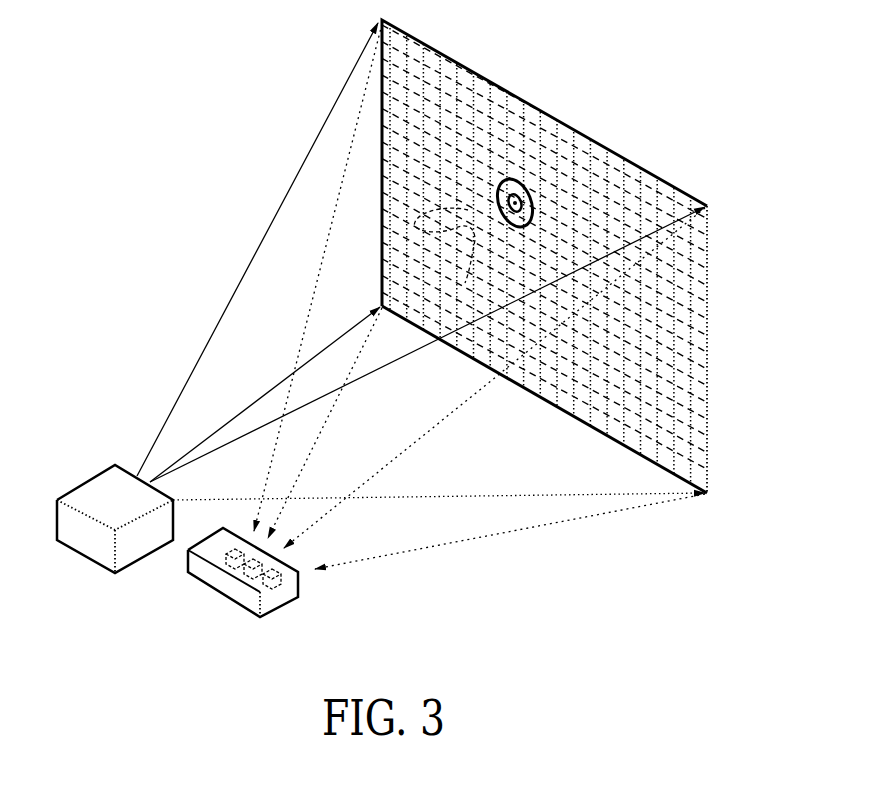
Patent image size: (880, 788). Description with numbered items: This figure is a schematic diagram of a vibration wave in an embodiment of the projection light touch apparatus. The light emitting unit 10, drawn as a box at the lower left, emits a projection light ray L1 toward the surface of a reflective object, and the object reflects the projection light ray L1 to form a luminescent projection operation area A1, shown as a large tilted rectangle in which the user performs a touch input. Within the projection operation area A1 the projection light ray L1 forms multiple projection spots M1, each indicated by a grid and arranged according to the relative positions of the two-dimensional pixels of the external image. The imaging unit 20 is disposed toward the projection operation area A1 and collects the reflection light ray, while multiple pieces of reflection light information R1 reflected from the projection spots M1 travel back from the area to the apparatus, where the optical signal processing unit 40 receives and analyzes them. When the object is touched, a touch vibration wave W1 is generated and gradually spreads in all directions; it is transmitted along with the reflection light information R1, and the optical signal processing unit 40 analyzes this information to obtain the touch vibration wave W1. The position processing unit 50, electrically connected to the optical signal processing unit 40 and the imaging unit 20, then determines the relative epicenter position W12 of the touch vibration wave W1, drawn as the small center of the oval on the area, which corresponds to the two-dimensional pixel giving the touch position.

The light emitting unit 10 is at (83, 540).
The imaging unit 20 is at (225, 572).
The optical signal processing unit 40 is at (237, 585).
The position processing unit 50 is at (296, 598).
The projection operation area A1 is at (708, 282).
The projection spots M1 is at (482, 85).
The touch vibration wave W1 is at (527, 168).
The relative epicenter position W12 is at (520, 200).
The projection light ray L1 is at (236, 295).
The reflection light information R1 is at (332, 212).